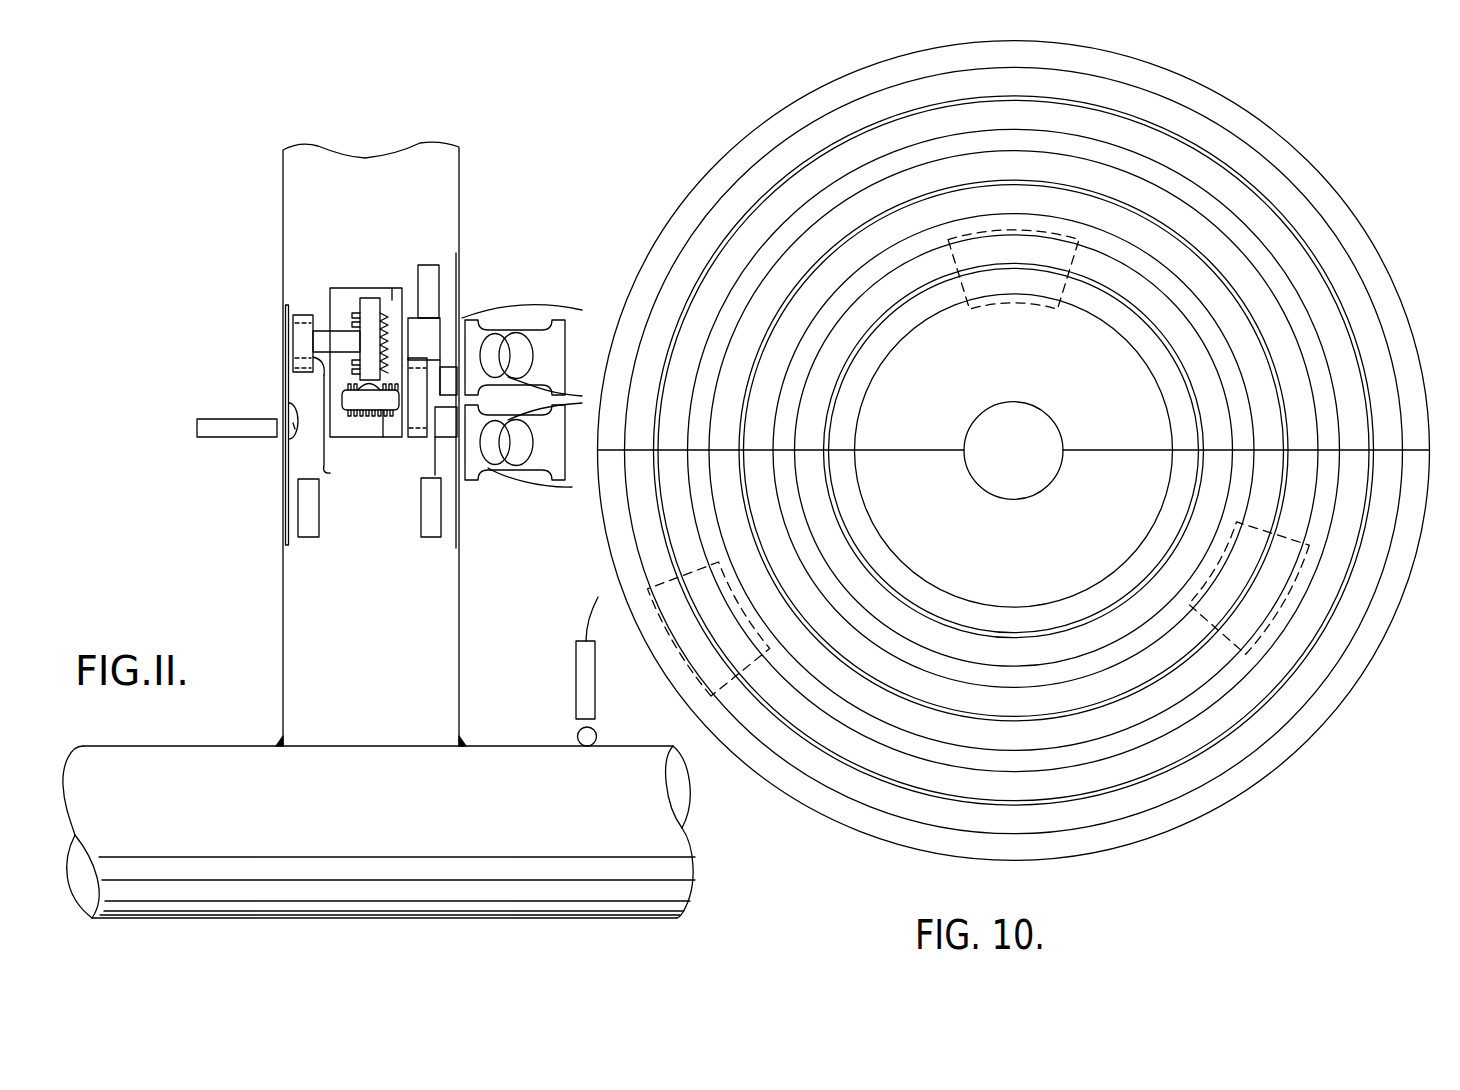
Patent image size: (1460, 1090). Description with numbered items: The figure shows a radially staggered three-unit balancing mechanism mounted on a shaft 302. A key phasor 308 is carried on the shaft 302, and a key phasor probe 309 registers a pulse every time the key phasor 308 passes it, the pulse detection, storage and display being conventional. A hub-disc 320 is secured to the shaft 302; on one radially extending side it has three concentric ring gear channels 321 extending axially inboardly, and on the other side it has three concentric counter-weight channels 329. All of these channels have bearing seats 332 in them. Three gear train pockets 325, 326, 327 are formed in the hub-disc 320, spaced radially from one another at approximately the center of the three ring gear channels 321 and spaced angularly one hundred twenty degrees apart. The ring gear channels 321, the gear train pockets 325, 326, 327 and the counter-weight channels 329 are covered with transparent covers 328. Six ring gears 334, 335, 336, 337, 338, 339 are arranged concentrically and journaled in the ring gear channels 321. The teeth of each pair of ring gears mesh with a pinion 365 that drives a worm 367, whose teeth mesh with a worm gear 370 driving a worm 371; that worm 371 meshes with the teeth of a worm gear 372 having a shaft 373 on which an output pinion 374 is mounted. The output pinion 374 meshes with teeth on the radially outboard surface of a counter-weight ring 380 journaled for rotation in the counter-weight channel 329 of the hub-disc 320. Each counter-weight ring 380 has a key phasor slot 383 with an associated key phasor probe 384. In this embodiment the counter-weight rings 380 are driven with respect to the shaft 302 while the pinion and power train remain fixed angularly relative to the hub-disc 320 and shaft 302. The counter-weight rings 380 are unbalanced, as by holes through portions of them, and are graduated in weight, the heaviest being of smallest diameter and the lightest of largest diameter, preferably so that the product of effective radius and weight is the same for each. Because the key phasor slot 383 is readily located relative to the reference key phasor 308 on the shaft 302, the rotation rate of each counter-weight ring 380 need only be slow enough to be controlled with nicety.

In FIG. 11, the shaft 302 is at (621, 905).
In FIG. 11, the key phasor 308 is at (598, 731).
In FIG. 11, the key phasor probe 309 is at (583, 670).
In FIG. 11, the hub-disc 320 is at (440, 617).
In FIG. 11, the ring gear channels 321 is at (458, 310).
In FIG. 10, the gear train pocket 325 is at (662, 593).
In FIG. 10, the gear train pocket 326 is at (1270, 620).
In FIG. 10, the gear train pocket 327 is at (1030, 252).
In FIG. 11, the gear train pocket 327 is at (333, 297).
In FIG. 11, the transparent covers 328 is at (287, 510).
In FIG. 11, the counter-weight channels 329 is at (326, 473).
In FIG. 11, the bearing seats 332 is at (303, 524).
In FIG. 10, the ring gear 334 is at (923, 305).
In FIG. 11, the ring gear 334 is at (412, 470).
In FIG. 10, the ring gear 335 is at (866, 308).
In FIG. 11, the ring gear 335 is at (434, 338).
In FIG. 10, the ring gear 336 is at (759, 470).
In FIG. 10, the ring gear 337 is at (727, 511).
In FIG. 10, the ring gear 338 is at (917, 773).
In FIG. 10, the ring gear 339 is at (855, 788).
In FIG. 11, the pinion 365 is at (418, 440).
In FIG. 11, the worm 367 is at (390, 417).
In FIG. 11, the worm gear 370 is at (364, 400).
In FIG. 11, the worm 371 is at (392, 300).
In FIG. 11, the worm gear 372 is at (376, 302).
In FIG. 11, the shaft 373 is at (308, 366).
In FIG. 11, the output pinion 374 is at (303, 345).
In FIG. 11, the counter-weight ring 380 is at (303, 459).
In FIG. 11, the key phasor slot 383 is at (292, 437).
In FIG. 11, the key phasor probe 384 is at (196, 425).